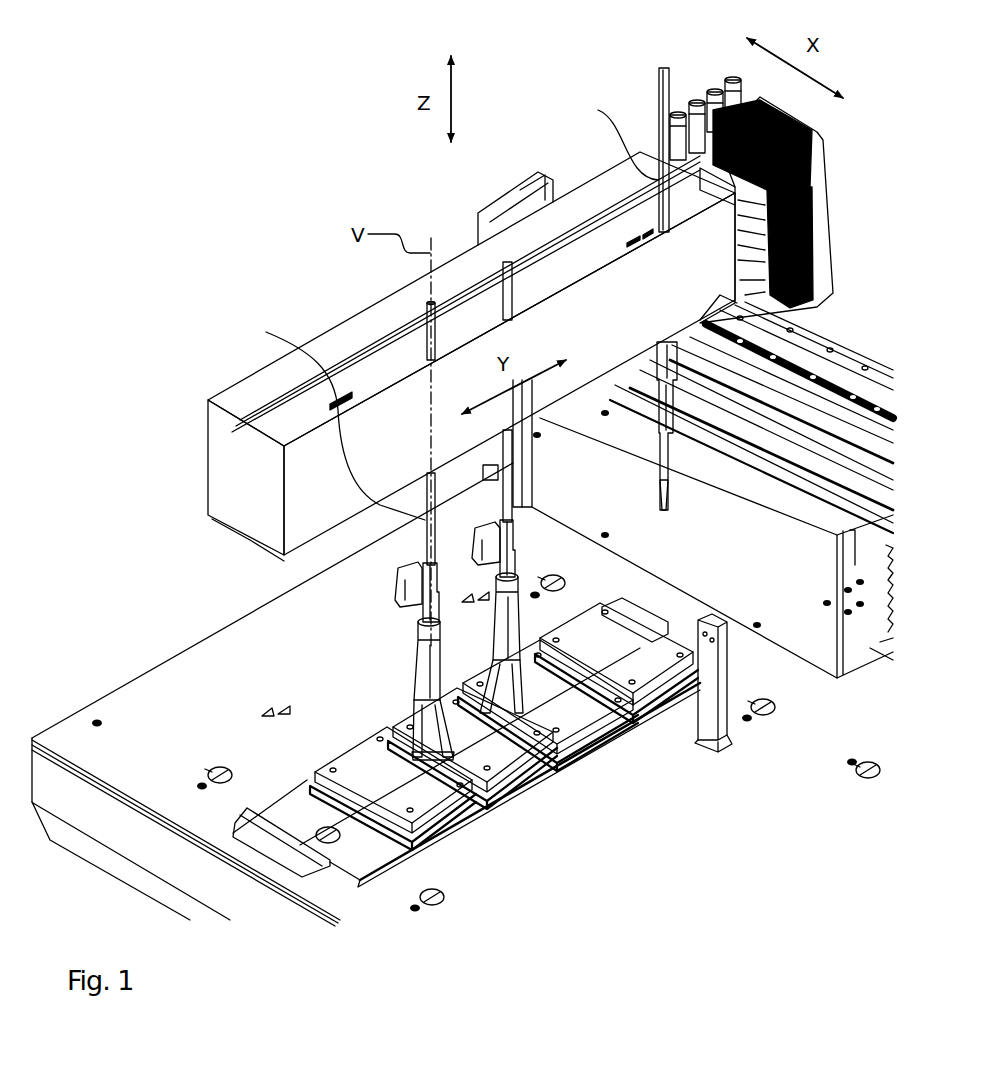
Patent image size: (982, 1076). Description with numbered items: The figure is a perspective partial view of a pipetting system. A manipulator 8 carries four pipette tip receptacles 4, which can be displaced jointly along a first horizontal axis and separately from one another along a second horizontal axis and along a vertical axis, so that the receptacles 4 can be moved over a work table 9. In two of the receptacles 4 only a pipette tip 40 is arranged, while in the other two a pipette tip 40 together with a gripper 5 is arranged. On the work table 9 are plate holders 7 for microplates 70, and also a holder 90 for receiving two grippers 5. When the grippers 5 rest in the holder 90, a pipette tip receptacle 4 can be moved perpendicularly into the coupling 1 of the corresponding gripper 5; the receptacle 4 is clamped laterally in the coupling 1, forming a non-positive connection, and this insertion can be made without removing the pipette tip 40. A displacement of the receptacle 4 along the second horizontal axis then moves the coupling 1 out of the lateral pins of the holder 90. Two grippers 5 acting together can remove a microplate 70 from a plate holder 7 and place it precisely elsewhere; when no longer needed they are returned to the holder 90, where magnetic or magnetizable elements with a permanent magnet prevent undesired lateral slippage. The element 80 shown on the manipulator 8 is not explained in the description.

The carrier / sample rack 1 is at (560, 748).
The pipetting gripper unit 4 is at (397, 600).
The carrier holder 5 is at (475, 762).
The guide rail 7 is at (565, 750).
The beam / transfer arm 8 is at (306, 280).
The work table 9 is at (157, 690).
The pipette tip / gripper finger 40 is at (672, 483).
The linear guide 70 is at (627, 723).
The cable / drive rod 80 is at (453, 294).
The stop post 90 is at (728, 742).